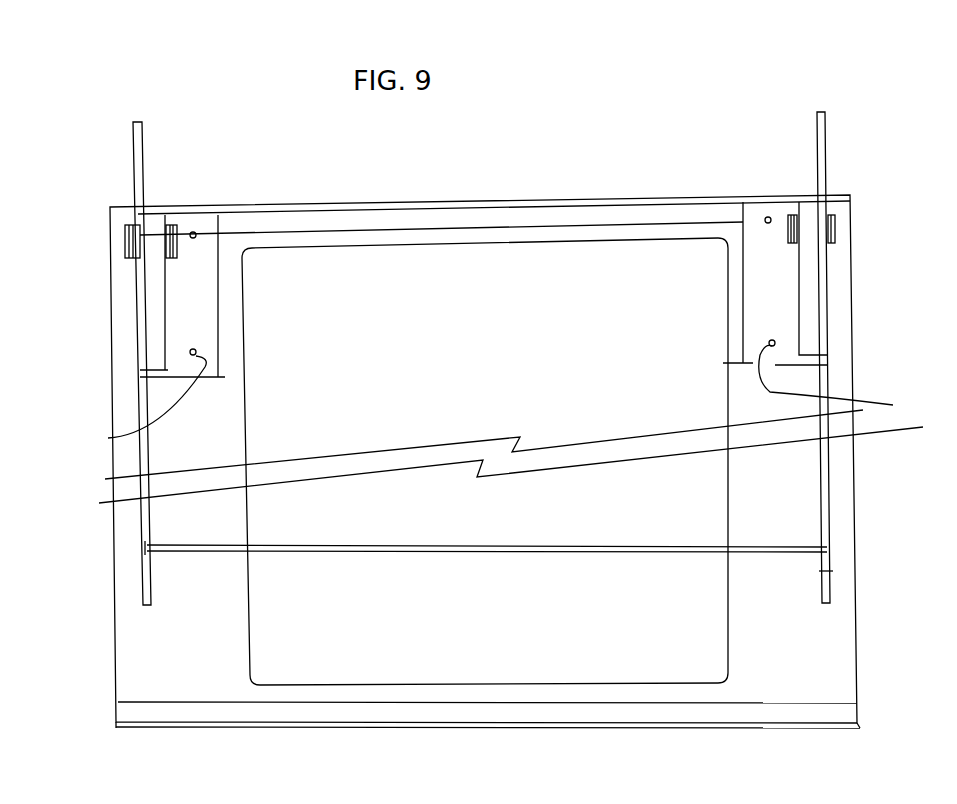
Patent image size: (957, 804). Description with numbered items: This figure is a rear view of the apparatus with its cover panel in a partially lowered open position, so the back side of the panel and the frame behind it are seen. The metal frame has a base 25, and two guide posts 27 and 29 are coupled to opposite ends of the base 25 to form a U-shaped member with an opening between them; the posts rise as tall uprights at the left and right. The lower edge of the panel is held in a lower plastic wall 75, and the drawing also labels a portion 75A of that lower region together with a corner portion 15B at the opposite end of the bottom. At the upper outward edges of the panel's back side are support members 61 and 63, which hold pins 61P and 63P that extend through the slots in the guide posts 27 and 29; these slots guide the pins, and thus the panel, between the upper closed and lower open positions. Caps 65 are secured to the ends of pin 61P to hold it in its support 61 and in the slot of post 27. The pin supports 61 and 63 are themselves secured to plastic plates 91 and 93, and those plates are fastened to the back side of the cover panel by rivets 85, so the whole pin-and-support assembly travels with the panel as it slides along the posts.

The base portion 15B is at (128, 730).
The base 25 is at (193, 556).
The guide post 27 is at (821, 166).
The guide post 29 is at (133, 155).
The support member 61 is at (126, 240).
The pin 61P is at (836, 227).
The support member 63 is at (152, 332).
The pin 63P is at (168, 235).
The caps 65 is at (790, 227).
The lower plastic wall 75 is at (370, 728).
The base portion 75A is at (850, 726).
The rivets 85 is at (494, 399).
The plastic plate 91 is at (771, 348).
The plastic plate 93 is at (197, 372).